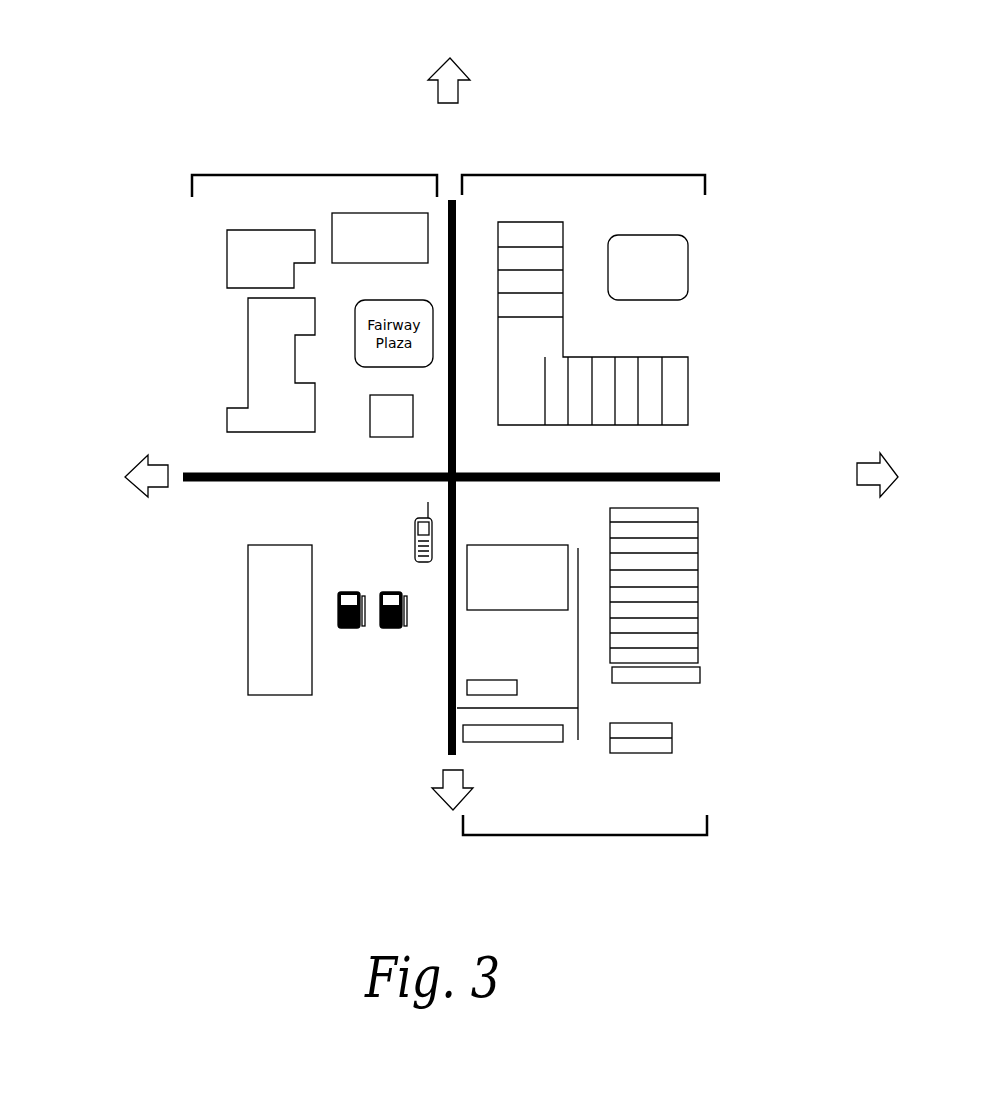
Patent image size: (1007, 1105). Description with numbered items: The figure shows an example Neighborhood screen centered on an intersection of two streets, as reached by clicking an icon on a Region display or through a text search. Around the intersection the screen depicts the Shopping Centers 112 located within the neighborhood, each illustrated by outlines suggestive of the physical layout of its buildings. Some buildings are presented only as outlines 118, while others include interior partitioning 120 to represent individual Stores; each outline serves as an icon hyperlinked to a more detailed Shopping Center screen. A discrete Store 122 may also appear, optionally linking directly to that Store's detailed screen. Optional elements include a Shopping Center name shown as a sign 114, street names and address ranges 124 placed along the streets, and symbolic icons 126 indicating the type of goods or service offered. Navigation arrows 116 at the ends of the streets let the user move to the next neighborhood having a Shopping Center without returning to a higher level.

The Shopping Center 112 is at (313, 173).
The sign 114 is at (688, 270).
The navigation arrow 116 is at (446, 61).
The building outline 118 is at (227, 272).
The building with interior partitioning 120 is at (688, 388).
The discrete Store 122 is at (248, 630).
The street name and address range 124 is at (517, 110).
The symbolic icon 126 is at (422, 505).